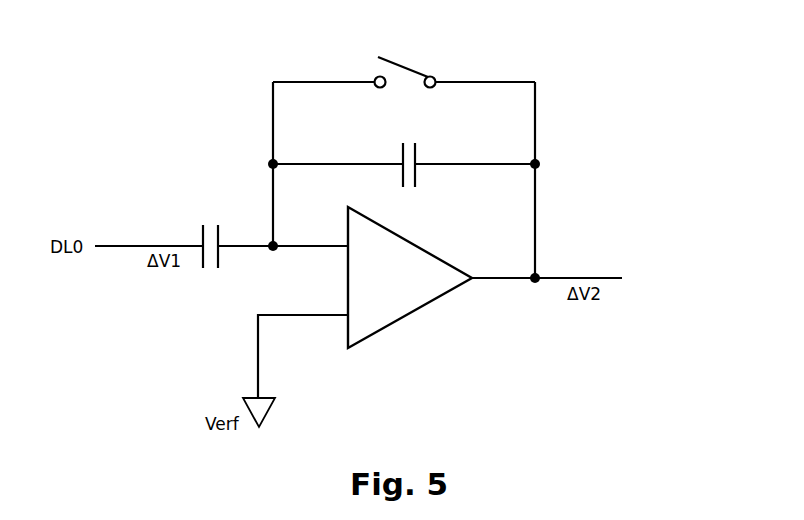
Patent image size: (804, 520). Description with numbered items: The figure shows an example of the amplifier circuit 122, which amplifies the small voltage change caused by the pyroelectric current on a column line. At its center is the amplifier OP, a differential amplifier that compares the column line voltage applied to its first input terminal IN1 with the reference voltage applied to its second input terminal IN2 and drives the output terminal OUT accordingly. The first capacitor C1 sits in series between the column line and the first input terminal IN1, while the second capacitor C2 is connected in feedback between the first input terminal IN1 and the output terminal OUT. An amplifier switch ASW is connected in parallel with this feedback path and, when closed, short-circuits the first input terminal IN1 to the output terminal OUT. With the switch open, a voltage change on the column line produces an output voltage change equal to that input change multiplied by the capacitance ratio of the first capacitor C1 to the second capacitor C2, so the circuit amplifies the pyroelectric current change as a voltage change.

The amplifier circuit 122 is at (562, 82).
The amplifier switch ASW is at (413, 68).
The first capacitor C1 is at (209, 236).
The second capacitor C2 is at (408, 155).
The amplifier OP is at (410, 277).
The first input terminal IN1 is at (348, 242).
The second input terminal IN2 is at (348, 320).
The output terminal OUT is at (487, 280).